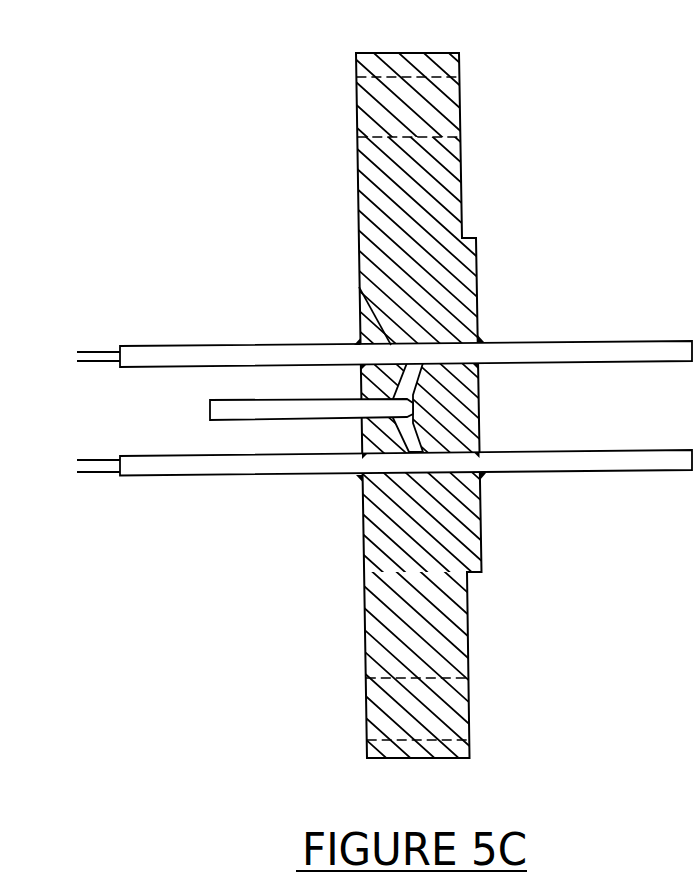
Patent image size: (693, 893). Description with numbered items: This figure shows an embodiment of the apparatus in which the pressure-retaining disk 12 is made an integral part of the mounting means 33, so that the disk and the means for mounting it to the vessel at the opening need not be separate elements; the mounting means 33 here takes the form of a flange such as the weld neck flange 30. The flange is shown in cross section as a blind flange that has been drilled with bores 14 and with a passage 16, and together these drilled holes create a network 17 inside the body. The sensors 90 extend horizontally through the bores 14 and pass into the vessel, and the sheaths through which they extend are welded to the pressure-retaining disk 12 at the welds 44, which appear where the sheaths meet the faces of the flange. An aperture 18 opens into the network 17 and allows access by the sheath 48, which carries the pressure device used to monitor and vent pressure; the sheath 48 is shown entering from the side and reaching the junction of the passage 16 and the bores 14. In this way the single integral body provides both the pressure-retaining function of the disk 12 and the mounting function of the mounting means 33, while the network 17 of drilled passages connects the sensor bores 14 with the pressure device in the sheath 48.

The disk 12 is at (410, 430).
The weld neck flange 30 is at (428, 73).
The mounting means 33 is at (353, 739).
The bores 14 is at (359, 287).
The weld 44 is at (425, 404).
The sensors 90 is at (384, 331).
The sheath 48 is at (207, 413).
The aperture 18 is at (324, 383).
The network 17 is at (415, 380).
The passage 16 is at (336, 438).